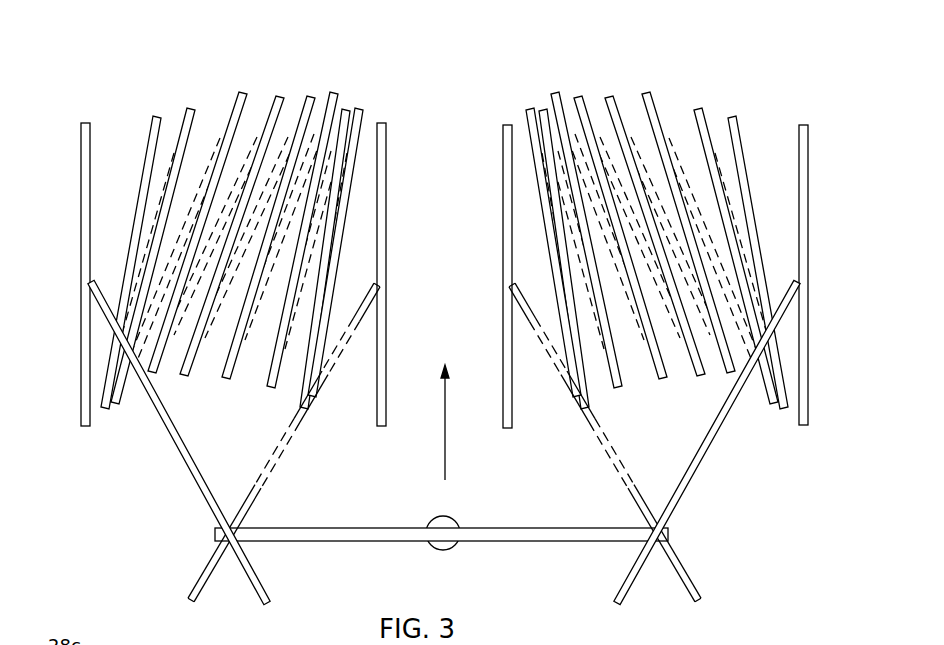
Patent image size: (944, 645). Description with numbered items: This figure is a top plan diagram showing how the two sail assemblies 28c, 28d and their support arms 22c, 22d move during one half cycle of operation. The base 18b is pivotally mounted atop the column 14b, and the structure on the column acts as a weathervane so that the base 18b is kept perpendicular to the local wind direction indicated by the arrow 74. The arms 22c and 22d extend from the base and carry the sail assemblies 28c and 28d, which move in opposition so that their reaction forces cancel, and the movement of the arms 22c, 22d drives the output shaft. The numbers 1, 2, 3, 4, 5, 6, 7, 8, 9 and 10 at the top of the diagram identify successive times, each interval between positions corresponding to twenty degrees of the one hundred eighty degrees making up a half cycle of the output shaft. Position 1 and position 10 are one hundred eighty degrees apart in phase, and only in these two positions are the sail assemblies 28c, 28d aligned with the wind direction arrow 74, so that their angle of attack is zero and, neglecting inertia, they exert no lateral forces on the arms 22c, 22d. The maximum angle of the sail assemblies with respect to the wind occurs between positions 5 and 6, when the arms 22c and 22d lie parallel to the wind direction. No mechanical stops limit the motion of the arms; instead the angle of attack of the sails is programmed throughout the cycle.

The position 1 is at (451, 233).
The position 2 is at (157, 115).
The position 3 is at (191, 108).
The position 4 is at (243, 93).
The position 5 is at (279, 96).
The position 6 is at (311, 96).
The position 7 is at (334, 92).
The position 8 is at (345, 110).
The position 9 is at (359, 109).
The position 10 is at (382, 123).
The sail assembly 28c is at (81, 255).
The sail assembly 28d is at (808, 237).
The arm 22c is at (195, 473).
The arm 22d is at (699, 467).
The base 18b is at (352, 542).
The column 14b is at (452, 546).
The wind direction arrow 74 is at (446, 456).